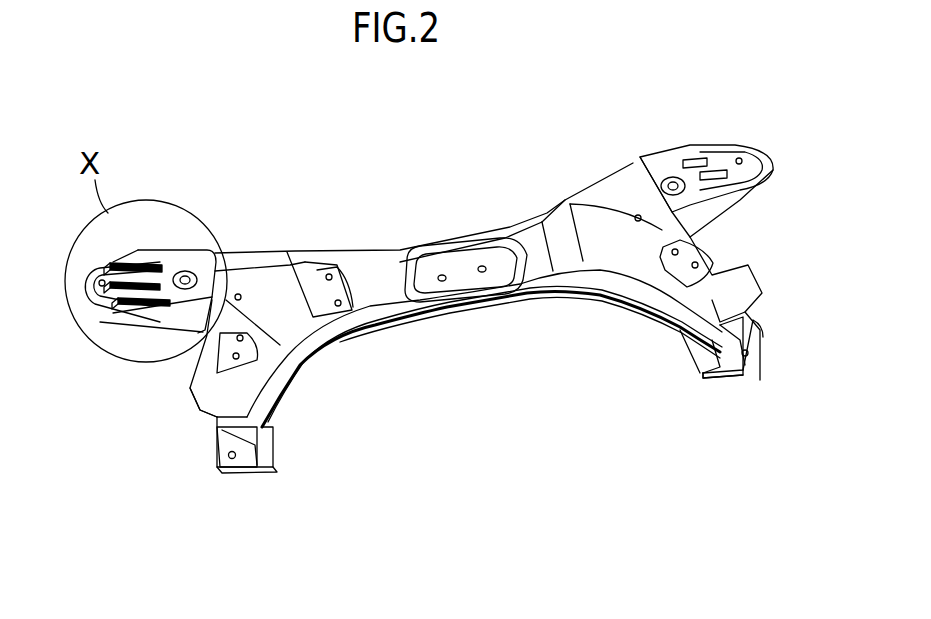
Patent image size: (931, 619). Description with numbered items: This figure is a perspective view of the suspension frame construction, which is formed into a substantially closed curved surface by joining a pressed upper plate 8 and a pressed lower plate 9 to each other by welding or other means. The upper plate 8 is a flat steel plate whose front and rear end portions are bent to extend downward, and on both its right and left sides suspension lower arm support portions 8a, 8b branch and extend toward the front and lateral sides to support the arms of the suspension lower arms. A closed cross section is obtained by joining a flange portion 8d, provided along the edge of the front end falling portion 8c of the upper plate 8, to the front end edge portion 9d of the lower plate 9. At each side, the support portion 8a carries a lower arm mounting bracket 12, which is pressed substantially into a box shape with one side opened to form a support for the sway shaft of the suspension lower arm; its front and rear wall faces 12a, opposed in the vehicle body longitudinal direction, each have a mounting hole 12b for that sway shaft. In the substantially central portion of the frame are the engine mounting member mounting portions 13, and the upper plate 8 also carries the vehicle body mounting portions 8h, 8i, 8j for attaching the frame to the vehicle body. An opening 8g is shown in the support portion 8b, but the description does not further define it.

The upper plate 8 is at (723, 282).
The suspension lower arm support portion 8a is at (192, 407).
The suspension lower arm support portion 8b is at (200, 256).
The front end falling portion 8c is at (590, 274).
The flange portion 8d is at (642, 312).
The bolt hole 8g is at (184, 276).
The vehicle body mounting portion 8h is at (228, 356).
The vehicle body mounting portion 8i is at (241, 293).
The vehicle body mounting portion 8j is at (102, 288).
The lower plate 9 is at (700, 373).
The front end edge portion 9d is at (683, 345).
The lower arm mounting bracket 12 is at (244, 457).
The front and rear wall faces 12a is at (750, 363).
The mounting hole 12b is at (722, 375).
The engine mounting member mounting portions 13 is at (443, 281).